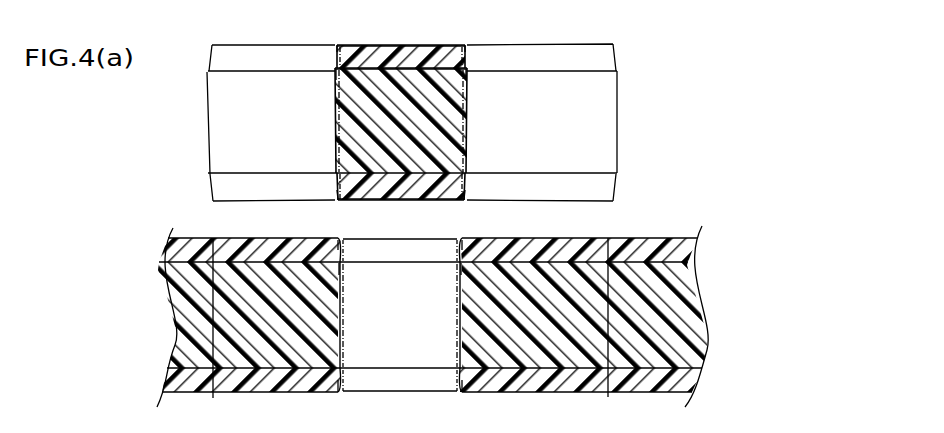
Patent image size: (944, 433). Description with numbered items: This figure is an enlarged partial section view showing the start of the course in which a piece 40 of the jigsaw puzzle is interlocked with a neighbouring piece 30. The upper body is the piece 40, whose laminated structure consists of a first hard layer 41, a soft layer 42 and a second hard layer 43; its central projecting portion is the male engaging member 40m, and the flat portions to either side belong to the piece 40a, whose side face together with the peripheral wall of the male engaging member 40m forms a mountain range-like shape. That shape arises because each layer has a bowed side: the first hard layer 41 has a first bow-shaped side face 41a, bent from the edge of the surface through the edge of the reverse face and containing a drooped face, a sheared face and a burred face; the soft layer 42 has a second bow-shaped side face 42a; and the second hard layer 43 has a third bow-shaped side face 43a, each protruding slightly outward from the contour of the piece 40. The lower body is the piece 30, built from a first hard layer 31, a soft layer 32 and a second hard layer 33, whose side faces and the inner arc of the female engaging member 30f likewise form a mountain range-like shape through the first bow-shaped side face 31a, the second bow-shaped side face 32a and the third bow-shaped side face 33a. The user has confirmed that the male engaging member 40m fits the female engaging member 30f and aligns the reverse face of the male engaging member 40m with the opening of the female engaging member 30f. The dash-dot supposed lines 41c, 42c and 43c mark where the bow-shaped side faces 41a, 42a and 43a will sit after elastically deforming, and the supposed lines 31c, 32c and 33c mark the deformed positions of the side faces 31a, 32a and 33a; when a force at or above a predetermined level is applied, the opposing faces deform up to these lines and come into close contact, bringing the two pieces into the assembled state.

The piece 30 is at (602, 217).
The female engaging member 30f is at (398, 356).
The first hard layer 31 is at (232, 248).
The first bow-shaped side face 31a is at (340, 249).
The supposed line 31c is at (340, 253).
The soft layer 32 is at (258, 268).
The second bow-shaped side face 32a is at (341, 268).
The supposed line 32c is at (341, 324).
The second hard layer 33 is at (257, 387).
The third bow-shaped side face 33a is at (342, 374).
The supposed line 33c is at (342, 373).
The piece 40 is at (643, 64).
The piece 40a is at (553, 85).
The male engaging member 40m is at (401, 122).
The first hard layer 41 is at (371, 56).
The first bow-shaped side face 41a is at (335, 53).
The supposed line 41c is at (339, 46).
The soft layer 42 is at (421, 90).
The second bow-shaped side face 42a is at (337, 82).
The supposed line 42c is at (335, 124).
The second hard layer 43 is at (420, 186).
The third bow-shaped side face 43a is at (327, 196).
The supposed line 43c is at (335, 184).